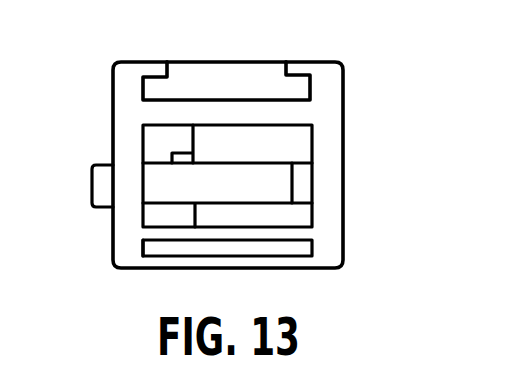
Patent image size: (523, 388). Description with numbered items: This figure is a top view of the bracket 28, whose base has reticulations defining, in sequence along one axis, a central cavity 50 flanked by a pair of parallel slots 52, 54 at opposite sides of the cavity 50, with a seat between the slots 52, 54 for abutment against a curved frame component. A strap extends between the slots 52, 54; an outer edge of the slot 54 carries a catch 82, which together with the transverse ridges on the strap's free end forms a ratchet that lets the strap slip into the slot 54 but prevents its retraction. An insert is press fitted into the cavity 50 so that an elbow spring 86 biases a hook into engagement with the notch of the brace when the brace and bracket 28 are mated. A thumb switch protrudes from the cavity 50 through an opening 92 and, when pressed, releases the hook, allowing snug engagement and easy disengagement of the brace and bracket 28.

The bracket 28 is at (348, 140).
The slot 52 is at (247, 70).
The central cavity 50 is at (168, 147).
The elbow spring 86 is at (305, 182).
The catch 82 is at (188, 257).
The slot 54 is at (157, 250).
The opening 92 is at (102, 183).